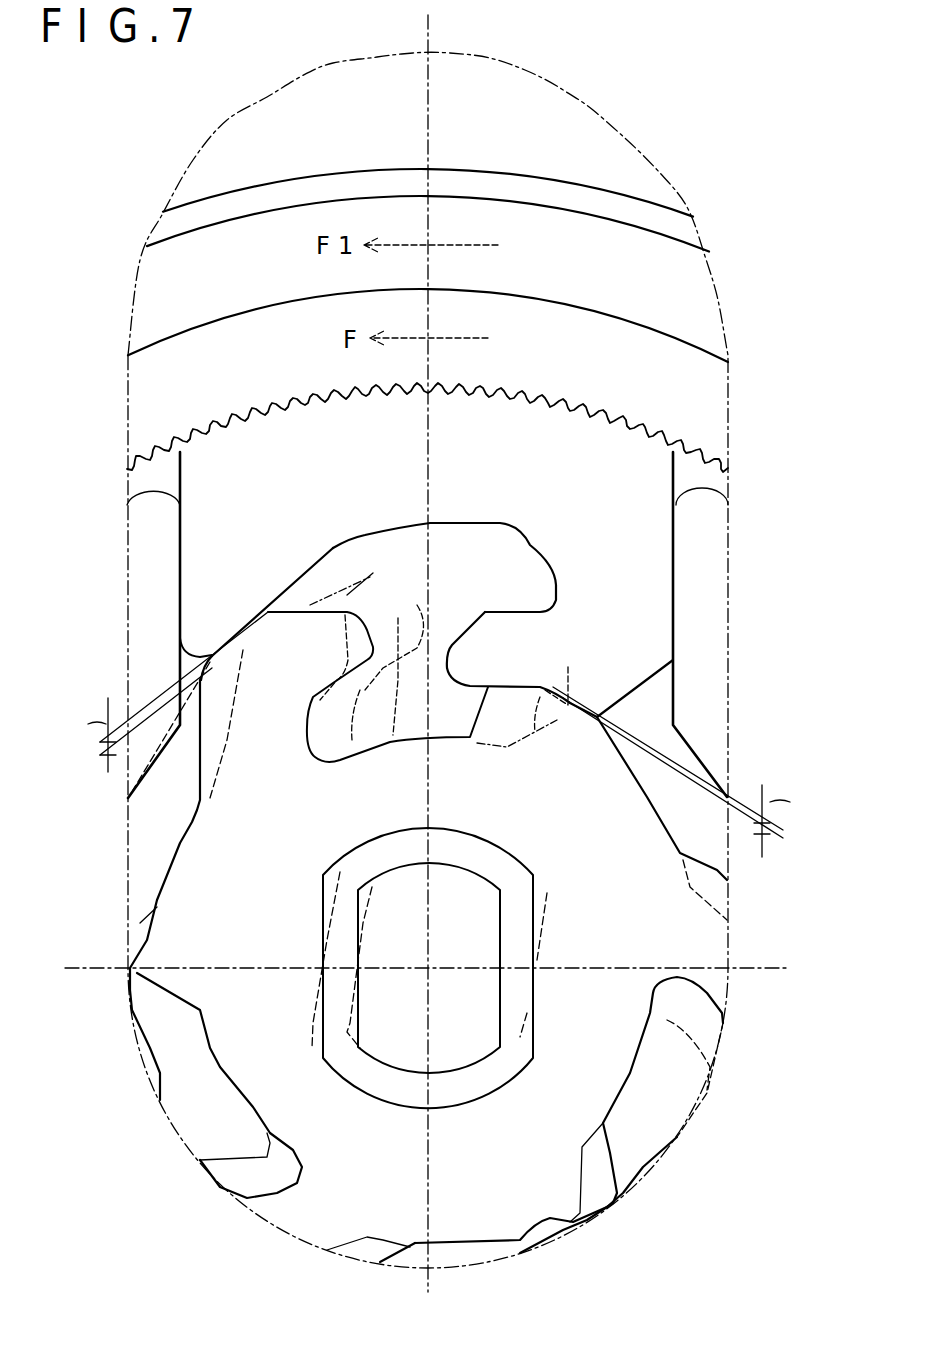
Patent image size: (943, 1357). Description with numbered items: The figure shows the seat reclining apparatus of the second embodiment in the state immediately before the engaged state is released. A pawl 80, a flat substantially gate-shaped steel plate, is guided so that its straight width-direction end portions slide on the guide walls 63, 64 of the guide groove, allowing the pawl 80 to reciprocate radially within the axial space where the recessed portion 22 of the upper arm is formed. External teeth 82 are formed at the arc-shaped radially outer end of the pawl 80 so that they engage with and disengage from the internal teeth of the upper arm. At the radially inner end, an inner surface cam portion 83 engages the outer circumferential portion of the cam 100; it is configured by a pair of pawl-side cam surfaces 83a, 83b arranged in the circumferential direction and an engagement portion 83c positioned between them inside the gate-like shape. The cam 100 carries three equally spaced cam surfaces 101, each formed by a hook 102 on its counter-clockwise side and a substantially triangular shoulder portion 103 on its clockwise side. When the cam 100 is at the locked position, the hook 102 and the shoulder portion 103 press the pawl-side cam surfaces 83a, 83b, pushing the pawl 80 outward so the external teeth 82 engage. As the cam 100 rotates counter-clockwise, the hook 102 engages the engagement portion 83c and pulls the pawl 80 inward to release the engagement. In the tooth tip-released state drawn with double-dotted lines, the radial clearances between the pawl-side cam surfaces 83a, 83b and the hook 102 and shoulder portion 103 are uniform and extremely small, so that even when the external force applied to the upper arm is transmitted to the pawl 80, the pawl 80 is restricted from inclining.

The recessed portion 22 is at (241, 432).
The external teeth 82 is at (266, 404).
The guide wall 64 is at (183, 588).
The guide wall 63 is at (670, 577).
The pawl 80 is at (652, 632).
The inner surface cam portion 83 is at (470, 740).
The pawl-side cam surface 83a is at (247, 643).
The pawl-side cam surface 83b is at (587, 742).
The engagement portion 83c is at (510, 627).
The cam 100 is at (717, 772).
The cam surface 101 is at (385, 742).
The hook 102 is at (400, 605).
The shoulder portion 103 is at (570, 690).